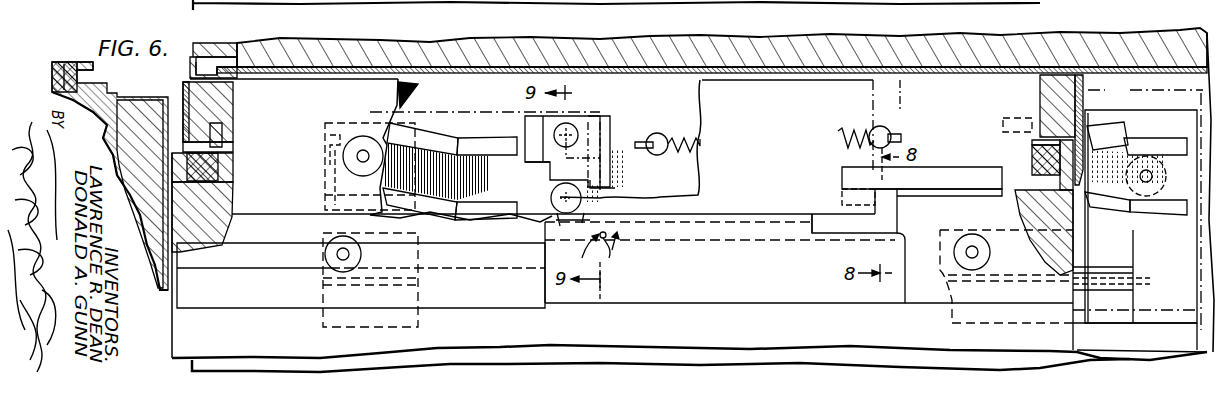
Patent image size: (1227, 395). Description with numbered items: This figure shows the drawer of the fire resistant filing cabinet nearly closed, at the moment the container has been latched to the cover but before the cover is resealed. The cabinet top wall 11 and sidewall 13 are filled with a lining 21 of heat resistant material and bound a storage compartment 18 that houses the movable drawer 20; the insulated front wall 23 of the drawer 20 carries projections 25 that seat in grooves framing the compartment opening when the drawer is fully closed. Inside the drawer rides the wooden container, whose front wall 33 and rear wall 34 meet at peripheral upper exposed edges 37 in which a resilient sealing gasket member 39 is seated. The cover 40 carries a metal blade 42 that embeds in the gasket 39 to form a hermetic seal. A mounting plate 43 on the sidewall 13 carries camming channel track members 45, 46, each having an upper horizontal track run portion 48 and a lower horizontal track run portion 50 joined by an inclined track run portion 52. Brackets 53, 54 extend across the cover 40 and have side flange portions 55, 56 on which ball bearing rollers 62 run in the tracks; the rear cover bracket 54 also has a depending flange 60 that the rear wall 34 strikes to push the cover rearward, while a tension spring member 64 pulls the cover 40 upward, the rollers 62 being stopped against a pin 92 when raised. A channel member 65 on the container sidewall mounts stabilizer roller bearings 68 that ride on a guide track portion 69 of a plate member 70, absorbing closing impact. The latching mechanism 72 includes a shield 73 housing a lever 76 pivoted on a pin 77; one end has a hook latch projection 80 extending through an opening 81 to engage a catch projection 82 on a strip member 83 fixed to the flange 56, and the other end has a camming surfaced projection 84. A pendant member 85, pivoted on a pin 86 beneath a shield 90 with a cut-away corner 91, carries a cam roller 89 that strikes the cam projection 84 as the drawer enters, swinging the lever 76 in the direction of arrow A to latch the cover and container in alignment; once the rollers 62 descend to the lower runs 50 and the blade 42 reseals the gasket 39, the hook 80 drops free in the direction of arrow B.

The top wall 11 is at (768, 45).
The sidewall 13 is at (680, 80).
The storage compartment 18 is at (462, 88).
The drawer 20 is at (50, 2).
The lining 21 is at (838, 40).
The front wall 23 is at (52, 72).
The complementary projections 25 is at (85, 62).
The front wall 33 is at (236, 198).
The rear wall 34 is at (1198, 278).
The peripheral upper exposed edges 37 is at (183, 100).
The sealing gasket member 39 is at (236, 172).
The cover 40 is at (181, 76).
The metal blade 42 is at (237, 146).
The mounting plate 43 is at (1168, 315).
The camming channel track member 45 is at (478, 129).
The camming channel track member 46 is at (1150, 136).
The upper horizontal track run portion 48 is at (330, 200).
The lower horizontal track run portion 50 is at (500, 200).
The inclined track run portion 52 is at (436, 197).
The front cover bracket 53 is at (265, 80).
The rear cover bracket 54 is at (1036, 80).
The side flange portion 55 is at (317, 114).
The side flange portion 56 is at (977, 114).
The flange 60 is at (1145, 208).
The ball bearing roller 62 is at (340, 154).
The tension spring member 64 is at (842, 130).
The channel member 65 is at (256, 308).
The stabilizer roller bearing 68 is at (325, 265).
The guide track portion 69 is at (420, 290).
The plate member 70 is at (1134, 262).
The latching mechanism 72 is at (787, 288).
The shield 73 is at (688, 300).
The lever 76 is at (746, 240).
The pin 77 is at (608, 245).
The hook latch projection 80 is at (888, 198).
The opening 81 is at (846, 232).
The catch projection 82 is at (850, 196).
The strip member 83 is at (952, 172).
The camming surfaced projection 84 is at (560, 225).
The pendant member 85 is at (617, 185).
The pin 86 is at (570, 127).
The cam roller 89 is at (553, 194).
The shield 90 is at (605, 125).
The cut away 91 is at (528, 155).
The pin 92 is at (325, 173).
The arrow A is at (613, 247).
The arrow B is at (591, 252).